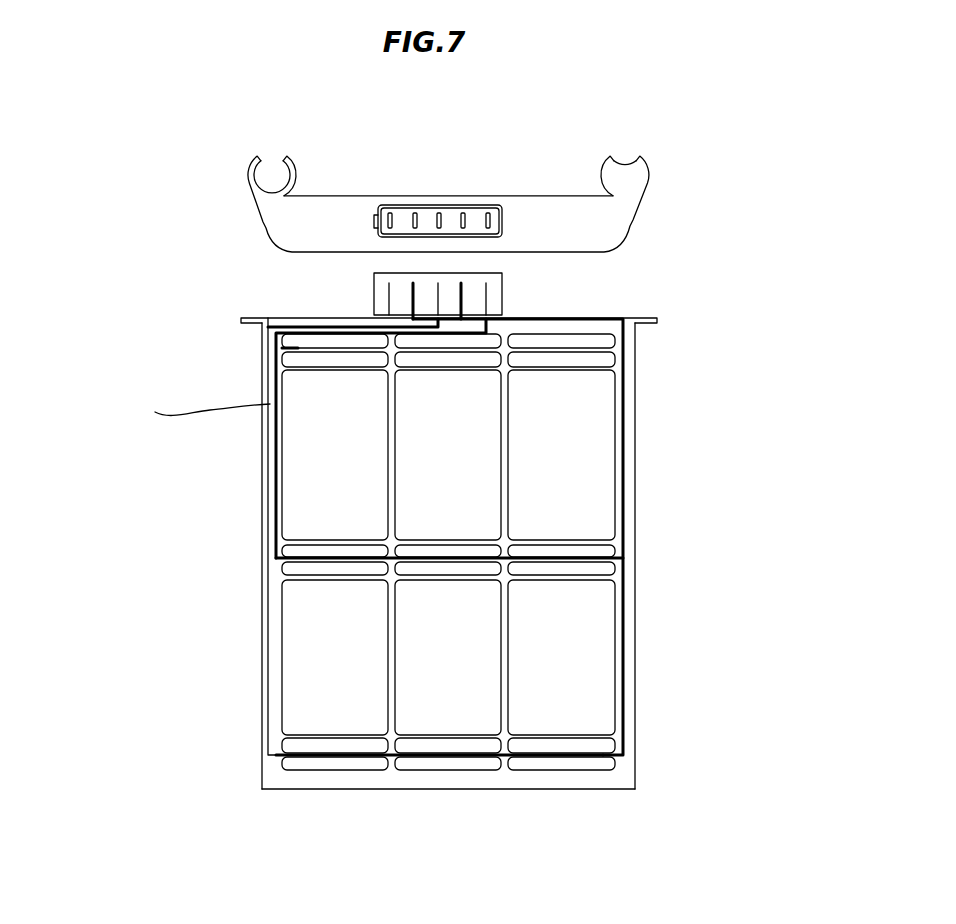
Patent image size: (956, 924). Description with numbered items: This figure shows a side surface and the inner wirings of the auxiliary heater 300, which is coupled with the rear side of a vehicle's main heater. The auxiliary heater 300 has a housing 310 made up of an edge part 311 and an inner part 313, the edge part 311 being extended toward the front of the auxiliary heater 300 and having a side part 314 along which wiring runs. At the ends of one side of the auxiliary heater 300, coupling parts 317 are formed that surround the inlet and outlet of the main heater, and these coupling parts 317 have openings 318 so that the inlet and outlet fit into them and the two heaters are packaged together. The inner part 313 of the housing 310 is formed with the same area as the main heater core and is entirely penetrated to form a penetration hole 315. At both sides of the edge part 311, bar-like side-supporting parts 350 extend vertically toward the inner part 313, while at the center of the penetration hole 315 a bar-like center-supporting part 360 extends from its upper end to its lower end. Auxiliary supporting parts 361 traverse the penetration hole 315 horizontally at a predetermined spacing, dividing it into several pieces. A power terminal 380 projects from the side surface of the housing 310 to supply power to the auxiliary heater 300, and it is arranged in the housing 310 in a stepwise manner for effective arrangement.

The auxiliary heater 300 is at (652, 226).
The housing 310 is at (647, 779).
The edge part 311 is at (423, 778).
The inner part 313 is at (430, 475).
The side part 314 is at (298, 315).
The penetration hole 315 is at (556, 633).
The coupling part 317 is at (650, 167).
The opening 318 is at (634, 172).
The side-supporting part 350 is at (553, 347).
The center-supporting part 360 is at (565, 556).
The auxiliary supporting part 361 is at (510, 683).
The power terminal 380 is at (477, 216).